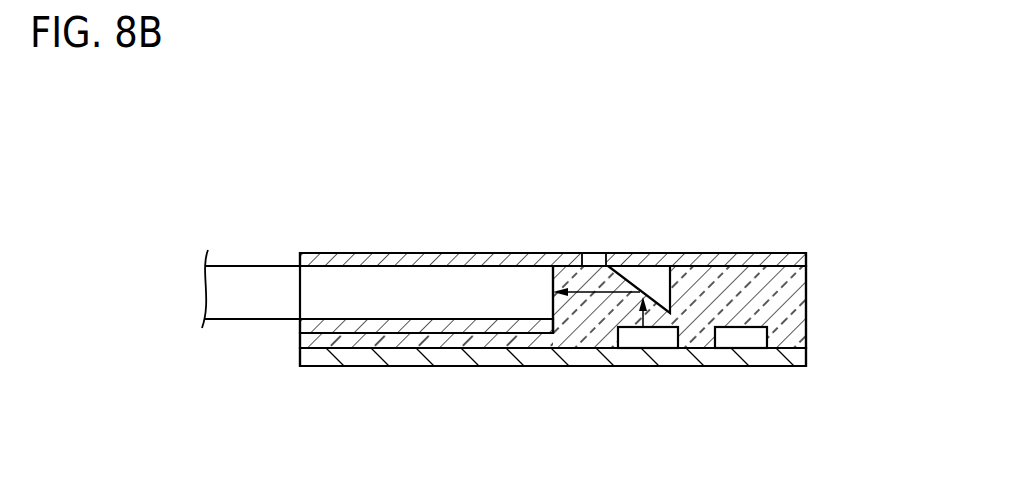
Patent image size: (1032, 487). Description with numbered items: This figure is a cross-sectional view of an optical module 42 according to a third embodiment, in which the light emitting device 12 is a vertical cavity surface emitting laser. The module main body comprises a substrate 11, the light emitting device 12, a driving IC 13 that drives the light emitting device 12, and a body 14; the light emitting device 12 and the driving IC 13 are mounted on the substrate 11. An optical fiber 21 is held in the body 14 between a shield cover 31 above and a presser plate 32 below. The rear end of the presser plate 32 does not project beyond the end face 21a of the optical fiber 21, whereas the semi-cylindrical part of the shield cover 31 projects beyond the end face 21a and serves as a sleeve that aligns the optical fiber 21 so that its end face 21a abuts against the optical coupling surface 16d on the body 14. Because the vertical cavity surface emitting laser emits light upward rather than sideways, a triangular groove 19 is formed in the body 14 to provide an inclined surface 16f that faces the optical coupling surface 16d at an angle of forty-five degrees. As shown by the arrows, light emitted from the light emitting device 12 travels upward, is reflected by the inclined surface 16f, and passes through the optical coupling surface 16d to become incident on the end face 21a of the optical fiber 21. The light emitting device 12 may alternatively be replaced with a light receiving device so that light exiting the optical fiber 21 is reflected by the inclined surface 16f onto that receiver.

The optical module 42 is at (354, 138).
The shield cover 31 is at (732, 252).
The optical fiber 21 is at (245, 320).
The end face of the optical fiber 21a is at (563, 303).
The presser plate 32 is at (394, 366).
The body 14 is at (806, 296).
The substrate 11 is at (806, 352).
The light emitting device 12 is at (650, 338).
The driving IC 13 is at (752, 338).
The optical coupling surface 16d is at (550, 278).
The inclined surface 16f is at (612, 278).
The triangular groove 19 is at (637, 288).